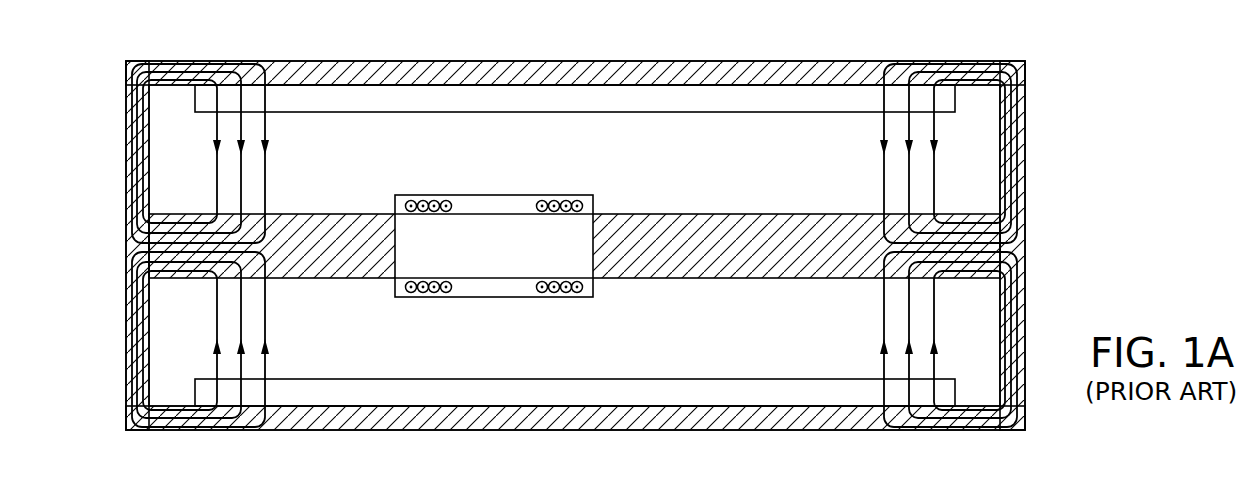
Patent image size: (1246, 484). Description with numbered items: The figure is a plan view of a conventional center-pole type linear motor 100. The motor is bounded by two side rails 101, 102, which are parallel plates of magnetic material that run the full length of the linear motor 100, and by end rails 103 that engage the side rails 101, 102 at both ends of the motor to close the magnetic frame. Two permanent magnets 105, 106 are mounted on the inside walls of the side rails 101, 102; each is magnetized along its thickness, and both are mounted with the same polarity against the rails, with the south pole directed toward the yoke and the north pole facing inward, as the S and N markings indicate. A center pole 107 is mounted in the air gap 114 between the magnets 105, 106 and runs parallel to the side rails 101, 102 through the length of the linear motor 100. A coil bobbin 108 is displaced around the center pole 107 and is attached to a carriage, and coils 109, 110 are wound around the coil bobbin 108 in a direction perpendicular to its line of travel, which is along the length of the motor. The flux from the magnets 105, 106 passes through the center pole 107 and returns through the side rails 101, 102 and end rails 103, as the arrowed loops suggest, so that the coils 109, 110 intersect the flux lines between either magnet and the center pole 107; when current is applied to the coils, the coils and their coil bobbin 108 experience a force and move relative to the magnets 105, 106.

The center-pole type linear motor 100 is at (1061, 105).
The side rail 101 is at (601, 61).
The side rail 102 is at (604, 431).
The end rail 103 is at (125, 247).
The permanent magnet 105 is at (601, 112).
The permanent magnet 106 is at (601, 379).
The center pole 107 is at (338, 214).
The coil bobbin 108 is at (505, 195).
The coil 109 is at (427, 278).
The coil 110 is at (562, 214).
The air gap 114 is at (803, 341).